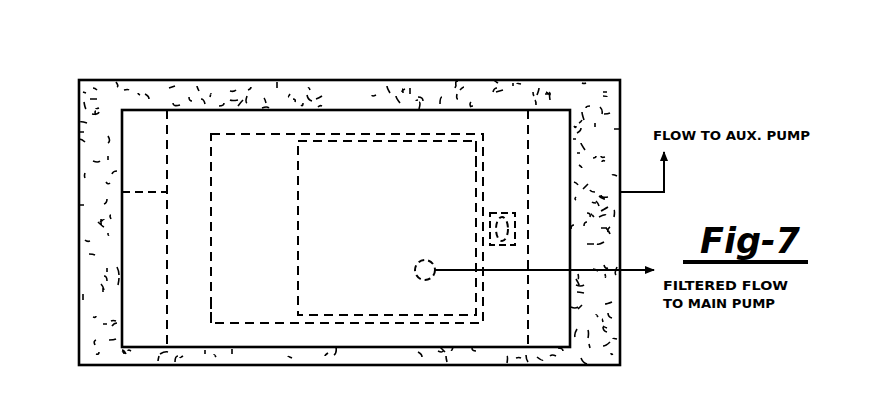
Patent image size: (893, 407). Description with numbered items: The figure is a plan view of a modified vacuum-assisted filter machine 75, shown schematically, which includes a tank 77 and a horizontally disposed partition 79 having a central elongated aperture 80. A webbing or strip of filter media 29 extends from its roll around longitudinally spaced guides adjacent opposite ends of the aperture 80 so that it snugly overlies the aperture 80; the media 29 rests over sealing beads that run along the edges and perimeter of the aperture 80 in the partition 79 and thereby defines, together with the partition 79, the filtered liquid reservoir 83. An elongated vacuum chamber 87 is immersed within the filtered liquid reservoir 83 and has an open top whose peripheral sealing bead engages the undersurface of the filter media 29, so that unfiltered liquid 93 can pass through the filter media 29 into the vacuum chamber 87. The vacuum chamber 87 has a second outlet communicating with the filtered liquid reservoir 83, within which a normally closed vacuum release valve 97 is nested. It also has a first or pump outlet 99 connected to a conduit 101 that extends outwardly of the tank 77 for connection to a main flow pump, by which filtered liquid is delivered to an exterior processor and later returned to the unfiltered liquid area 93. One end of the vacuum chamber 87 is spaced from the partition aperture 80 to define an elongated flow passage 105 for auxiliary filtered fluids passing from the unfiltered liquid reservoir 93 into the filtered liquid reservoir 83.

The vacuum-assisted filter machine 75 is at (103, 53).
The tank 77 is at (79, 282).
The unfiltered liquid 93 is at (268, 96).
The filter media 29 is at (167, 140).
The filtered liquid reservoir 83 is at (122, 192).
The partition 79 is at (188, 228).
The vacuum chamber 87 is at (298, 238).
The central elongated aperture 80 is at (211, 304).
The elongated flow passage 105 is at (480, 176).
The vacuum release valve 97 is at (516, 226).
The pump outlet 99 is at (426, 259).
The conduit 101 is at (606, 268).